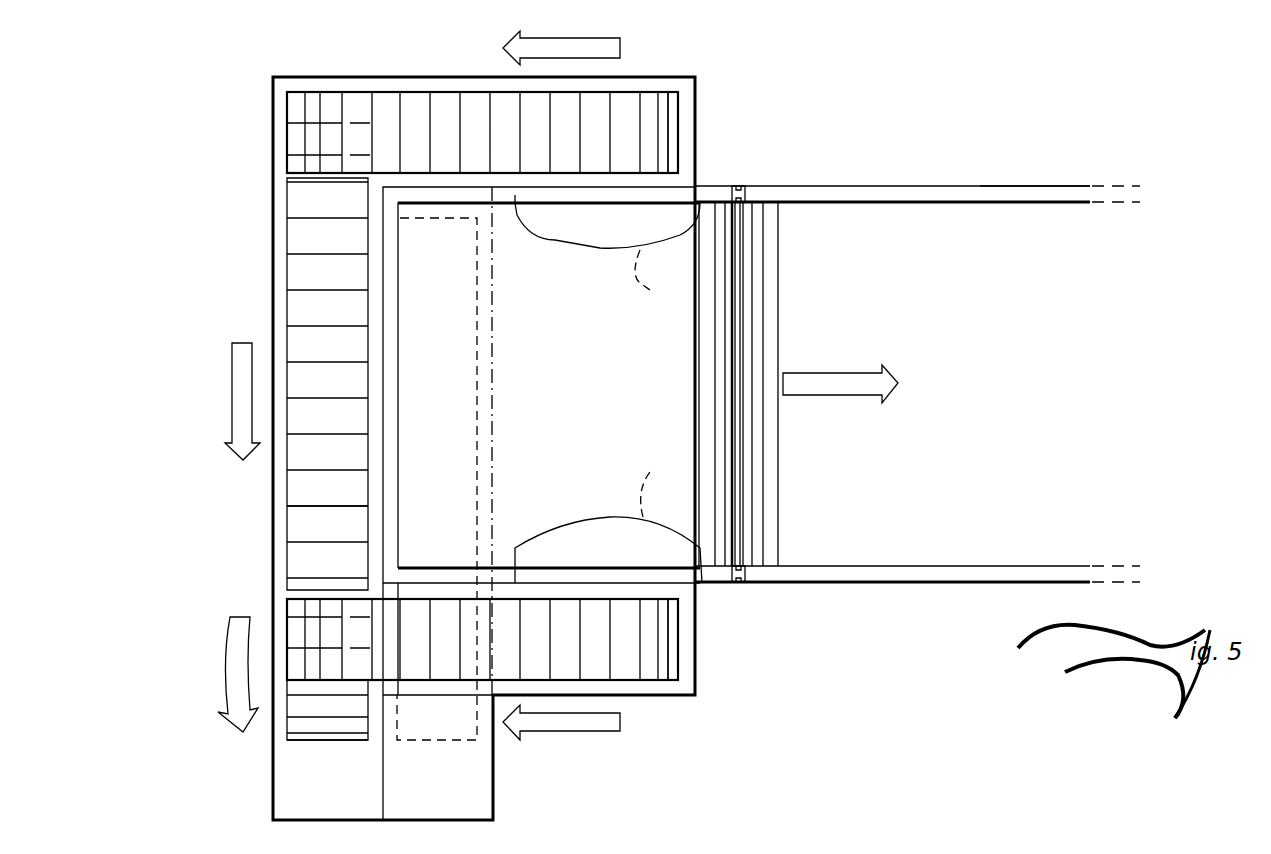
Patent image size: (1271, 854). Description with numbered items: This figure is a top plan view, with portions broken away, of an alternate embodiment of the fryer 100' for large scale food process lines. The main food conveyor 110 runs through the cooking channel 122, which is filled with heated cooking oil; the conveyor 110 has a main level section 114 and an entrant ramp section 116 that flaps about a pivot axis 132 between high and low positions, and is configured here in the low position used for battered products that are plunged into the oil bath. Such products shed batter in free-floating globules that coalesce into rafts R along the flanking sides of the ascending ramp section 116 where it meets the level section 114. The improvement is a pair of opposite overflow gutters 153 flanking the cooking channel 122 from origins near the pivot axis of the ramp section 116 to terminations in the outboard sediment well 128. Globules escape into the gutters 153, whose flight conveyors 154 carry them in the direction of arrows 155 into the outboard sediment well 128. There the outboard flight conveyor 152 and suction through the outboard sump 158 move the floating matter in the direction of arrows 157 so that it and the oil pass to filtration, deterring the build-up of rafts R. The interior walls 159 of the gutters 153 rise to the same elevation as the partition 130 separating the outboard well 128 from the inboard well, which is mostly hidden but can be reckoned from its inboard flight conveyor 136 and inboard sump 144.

The fryer 100' is at (414, 448).
The main food conveyor 110 is at (1018, 199).
The main level section 114 is at (868, 462).
The ramp section 116 is at (618, 398).
The cooking channel 122 is at (815, 192).
The outboard sediment well 128 is at (280, 213).
The partition 130 is at (385, 325).
The pivot axis 132 is at (738, 322).
The inboard flight conveyor 136 is at (487, 437).
The inboard sump 144 is at (470, 796).
The outboard flight conveyor 152 is at (313, 540).
The overflow gutters 153 is at (433, 77).
The flight conveyors 154 is at (695, 118).
The arrows 155 is at (515, 38).
The arrows 157 is at (243, 343).
The outboard sump 158 is at (293, 790).
The interior walls 159 is at (695, 172).
The rafts R is at (652, 383).